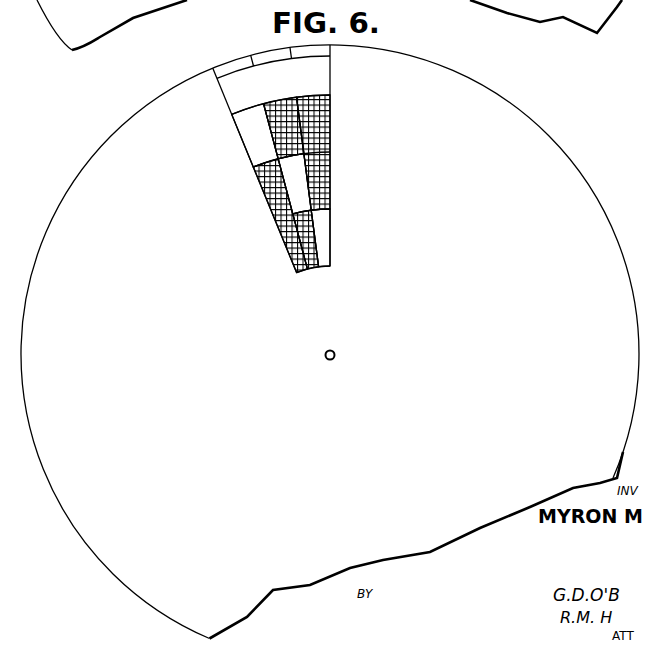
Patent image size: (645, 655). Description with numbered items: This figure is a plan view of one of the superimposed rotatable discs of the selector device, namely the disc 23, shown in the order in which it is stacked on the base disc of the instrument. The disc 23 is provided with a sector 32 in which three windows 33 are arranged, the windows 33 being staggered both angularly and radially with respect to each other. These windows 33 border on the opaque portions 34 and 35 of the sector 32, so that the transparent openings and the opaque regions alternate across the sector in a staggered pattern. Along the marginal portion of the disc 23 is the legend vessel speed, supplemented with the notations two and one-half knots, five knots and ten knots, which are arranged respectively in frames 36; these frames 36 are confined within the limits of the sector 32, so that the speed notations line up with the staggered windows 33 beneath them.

The disc 23 is at (525, 128).
The sector 32 is at (332, 174).
The windows 33 is at (244, 139).
The opaque portion 34 is at (280, 231).
The opaque portion 35 is at (327, 126).
The frames 36 is at (293, 48).